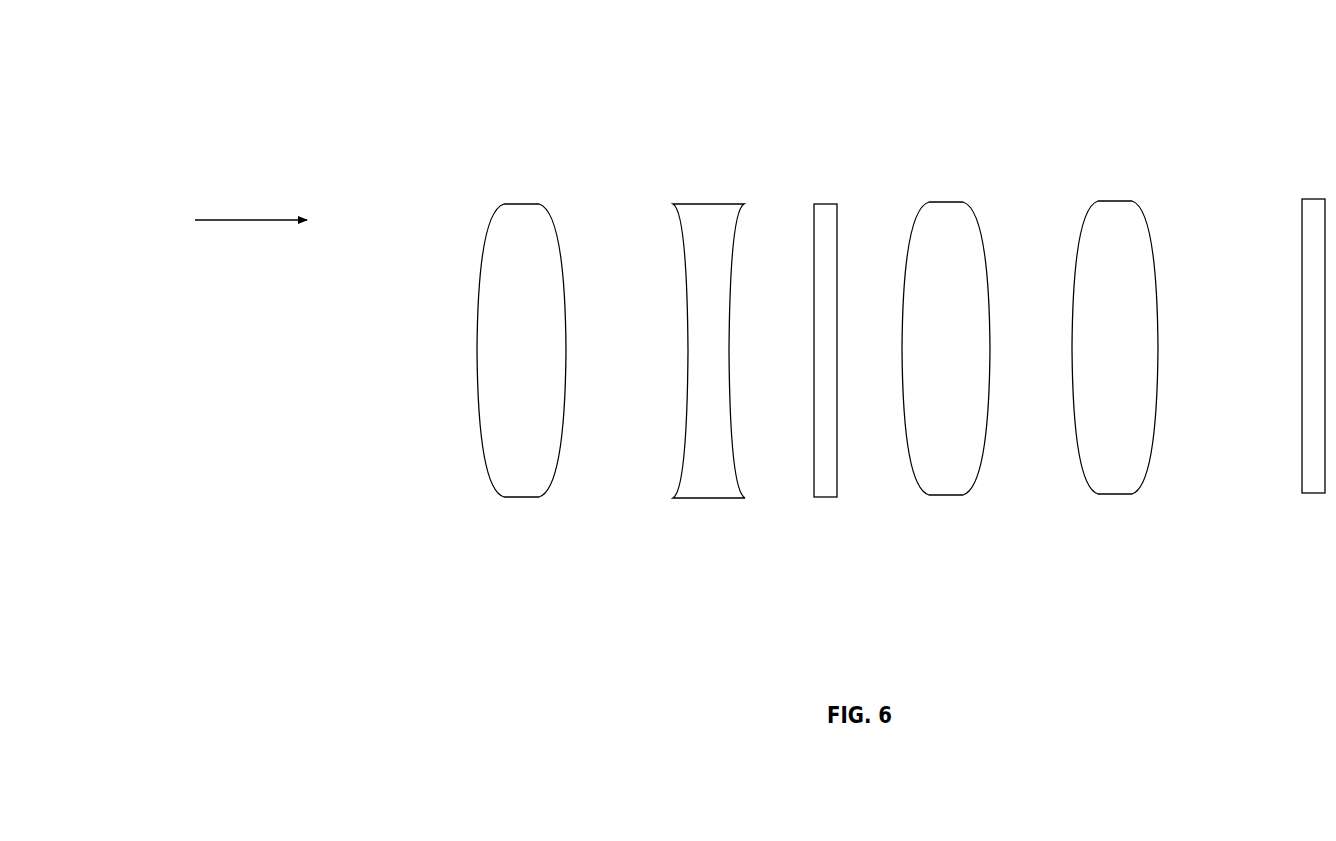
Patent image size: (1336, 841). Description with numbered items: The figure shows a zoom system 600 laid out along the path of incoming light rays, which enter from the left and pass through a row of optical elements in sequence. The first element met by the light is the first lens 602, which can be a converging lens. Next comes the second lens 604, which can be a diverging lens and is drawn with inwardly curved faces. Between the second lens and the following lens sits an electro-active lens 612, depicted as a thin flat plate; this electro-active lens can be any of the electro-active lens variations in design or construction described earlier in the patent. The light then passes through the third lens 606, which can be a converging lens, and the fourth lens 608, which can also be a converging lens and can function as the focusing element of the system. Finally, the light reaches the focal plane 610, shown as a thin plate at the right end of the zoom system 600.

The zoom system 600 is at (376, 101).
The first lens 602 is at (520, 497).
The second lens 604 is at (713, 498).
The third lens 606 is at (948, 495).
The fourth lens 608 is at (1120, 494).
The focal plane 610 is at (1315, 493).
The electro-active lens 612 is at (825, 497).